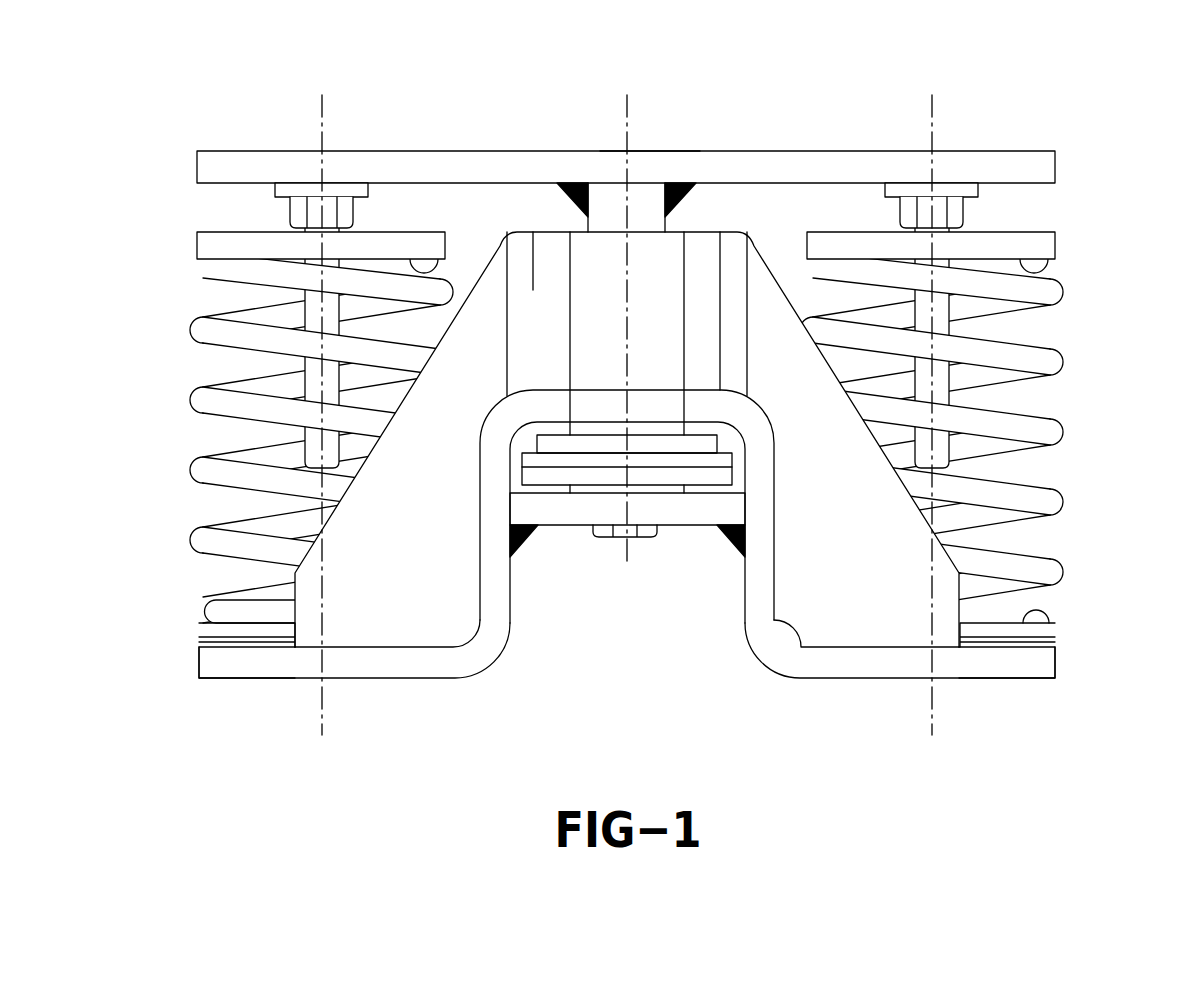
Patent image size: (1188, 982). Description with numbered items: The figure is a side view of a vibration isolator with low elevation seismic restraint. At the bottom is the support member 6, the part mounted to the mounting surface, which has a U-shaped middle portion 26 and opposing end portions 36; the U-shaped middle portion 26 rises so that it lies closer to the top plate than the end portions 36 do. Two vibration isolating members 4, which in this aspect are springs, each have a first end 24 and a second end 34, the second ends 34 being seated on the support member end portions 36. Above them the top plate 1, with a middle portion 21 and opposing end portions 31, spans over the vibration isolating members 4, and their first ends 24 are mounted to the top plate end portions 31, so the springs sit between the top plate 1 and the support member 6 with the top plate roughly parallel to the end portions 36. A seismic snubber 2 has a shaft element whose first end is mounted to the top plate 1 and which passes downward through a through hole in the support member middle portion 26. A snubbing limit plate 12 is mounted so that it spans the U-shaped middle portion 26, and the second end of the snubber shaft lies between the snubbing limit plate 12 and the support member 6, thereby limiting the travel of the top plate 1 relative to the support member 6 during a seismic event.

The top plate 1 is at (455, 165).
The seismic snubber 2 is at (611, 200).
The top plate middle portion 21 is at (652, 150).
The top plate end portions 31 is at (216, 150).
The vibration isolating member first end 24 is at (203, 259).
The vibration isolating members 4 is at (207, 436).
The support member middle portion 26 is at (553, 388).
The snubbing limit plate 12 is at (677, 515).
The support member 6 is at (405, 665).
The vibration isolating member second end 34 is at (201, 604).
The support member end portions 36 is at (219, 680).